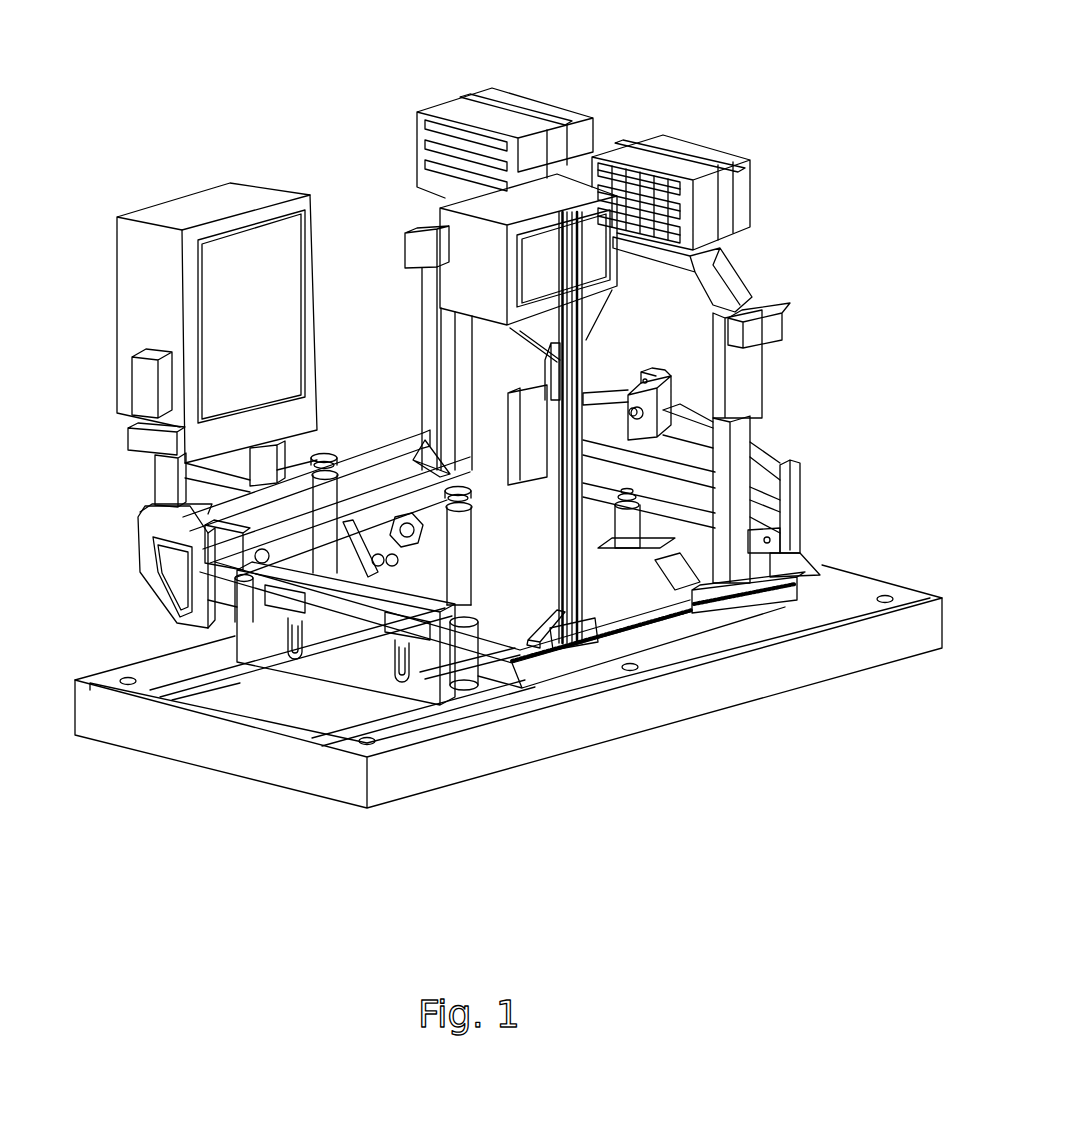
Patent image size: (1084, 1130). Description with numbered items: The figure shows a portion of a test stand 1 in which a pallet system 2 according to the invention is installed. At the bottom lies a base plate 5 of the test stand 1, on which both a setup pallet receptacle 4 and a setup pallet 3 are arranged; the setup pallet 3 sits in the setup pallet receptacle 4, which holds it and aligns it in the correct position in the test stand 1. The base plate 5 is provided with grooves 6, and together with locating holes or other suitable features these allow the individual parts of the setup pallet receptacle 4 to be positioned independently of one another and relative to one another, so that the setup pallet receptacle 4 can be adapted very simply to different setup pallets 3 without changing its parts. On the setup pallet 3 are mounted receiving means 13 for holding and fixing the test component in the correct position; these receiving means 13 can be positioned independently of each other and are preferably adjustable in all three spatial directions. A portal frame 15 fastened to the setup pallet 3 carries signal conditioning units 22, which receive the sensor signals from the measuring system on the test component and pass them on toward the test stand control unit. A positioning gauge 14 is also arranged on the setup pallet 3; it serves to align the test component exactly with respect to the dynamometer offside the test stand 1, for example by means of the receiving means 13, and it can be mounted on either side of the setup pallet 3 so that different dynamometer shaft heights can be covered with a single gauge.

The test stand 1 is at (712, 811).
The pallet system 2 is at (862, 530).
The setup pallet 3 is at (745, 625).
The setup pallet receptacle 4 is at (130, 612).
The base plate 5 is at (210, 745).
The grooves 6 is at (182, 695).
The receiving means 13 is at (458, 595).
The positioning gauge 14 is at (688, 433).
The portal frame 15 is at (720, 272).
The signal conditioning units 22 is at (525, 105).